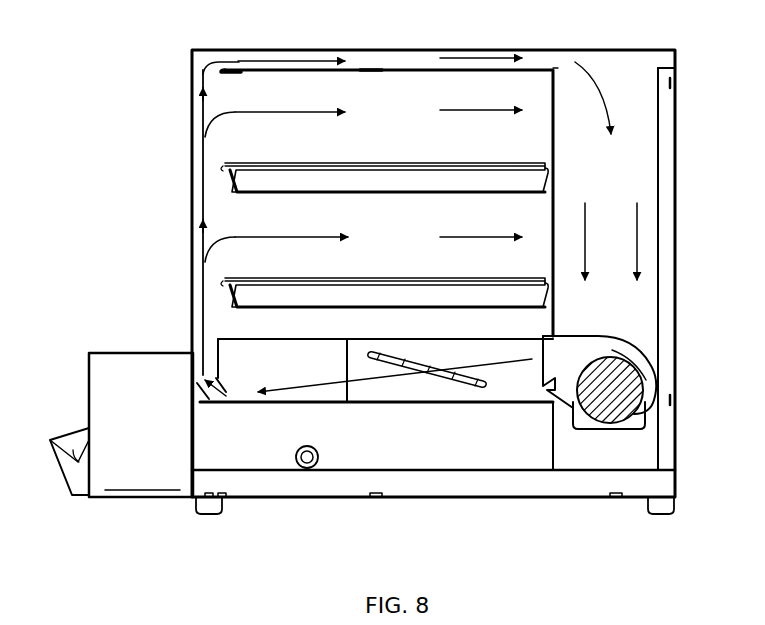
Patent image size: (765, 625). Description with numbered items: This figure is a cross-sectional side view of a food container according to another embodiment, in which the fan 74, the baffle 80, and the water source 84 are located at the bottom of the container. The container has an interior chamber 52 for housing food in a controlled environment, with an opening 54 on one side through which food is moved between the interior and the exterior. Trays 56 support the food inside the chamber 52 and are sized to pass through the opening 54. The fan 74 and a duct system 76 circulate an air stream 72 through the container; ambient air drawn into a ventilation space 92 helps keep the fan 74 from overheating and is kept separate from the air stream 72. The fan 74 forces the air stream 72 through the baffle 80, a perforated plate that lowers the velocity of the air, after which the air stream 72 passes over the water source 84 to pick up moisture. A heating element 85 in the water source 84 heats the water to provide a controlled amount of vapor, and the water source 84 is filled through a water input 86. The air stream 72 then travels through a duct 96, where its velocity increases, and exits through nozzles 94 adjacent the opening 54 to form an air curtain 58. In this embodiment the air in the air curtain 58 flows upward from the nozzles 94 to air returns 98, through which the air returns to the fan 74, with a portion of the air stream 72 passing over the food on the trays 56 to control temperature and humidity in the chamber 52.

The interior chamber 52 is at (283, 152).
The opening 54 is at (155, 157).
The trays 56 is at (388, 180).
The air curtain 58 is at (203, 297).
The air stream 72 is at (472, 54).
The fan 74 is at (649, 374).
The duct system 76 is at (628, 67).
The baffle 80 is at (311, 402).
The water source 84 is at (458, 452).
The heating element 85 is at (307, 468).
The water input 86 is at (57, 469).
The ventilation space 92 is at (668, 274).
The nozzles 94 is at (195, 346).
The duct 96 is at (206, 394).
The air returns 98 is at (203, 63).